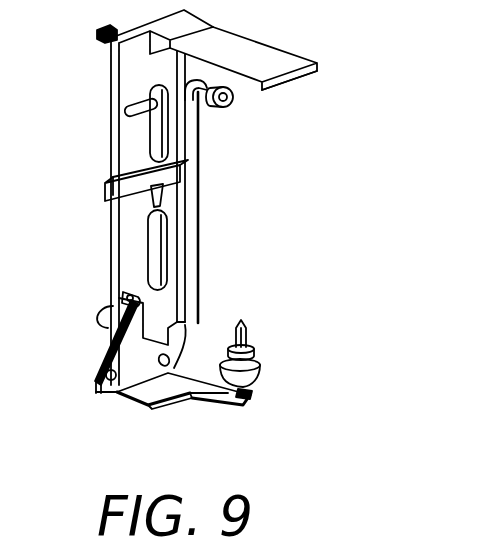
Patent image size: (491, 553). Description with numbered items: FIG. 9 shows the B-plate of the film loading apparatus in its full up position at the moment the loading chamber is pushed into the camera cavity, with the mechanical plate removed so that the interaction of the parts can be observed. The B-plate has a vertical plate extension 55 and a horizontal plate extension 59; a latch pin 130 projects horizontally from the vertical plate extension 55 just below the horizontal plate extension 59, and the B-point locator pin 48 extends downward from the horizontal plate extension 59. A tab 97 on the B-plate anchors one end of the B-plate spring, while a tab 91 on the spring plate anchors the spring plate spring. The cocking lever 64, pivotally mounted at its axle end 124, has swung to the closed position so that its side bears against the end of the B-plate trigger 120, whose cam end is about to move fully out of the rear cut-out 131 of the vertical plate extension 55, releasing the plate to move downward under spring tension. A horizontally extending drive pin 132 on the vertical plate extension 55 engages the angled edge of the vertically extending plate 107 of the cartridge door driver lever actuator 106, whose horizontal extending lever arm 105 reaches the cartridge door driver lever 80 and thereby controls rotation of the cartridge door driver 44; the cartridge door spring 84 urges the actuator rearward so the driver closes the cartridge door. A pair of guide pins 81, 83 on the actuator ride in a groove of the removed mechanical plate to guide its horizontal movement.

The cartridge door driver 44 is at (246, 330).
The B-point locator pin 48 is at (261, 89).
The vertical plate extension 55 is at (133, 69).
The horizontal plate extension 59 is at (267, 50).
The cocking lever 64 is at (195, 208).
The cartridge door driver lever 80 is at (253, 385).
The guide pin 81 is at (96, 389).
The guide pin 83 is at (178, 356).
The cartridge door spring 84 is at (261, 352).
The tab 91 is at (102, 314).
The tab 97 is at (98, 35).
The horizontal extending lever arm 105 is at (188, 403).
The cartridge door driver lever actuator 106 is at (123, 407).
The vertically extending plate 107 is at (102, 355).
The B-plate trigger 120 is at (102, 195).
The axle end 124 is at (233, 111).
The latch pin 130 is at (127, 111).
The rear cut-out 131 is at (157, 195).
The drive pin 132 is at (118, 294).